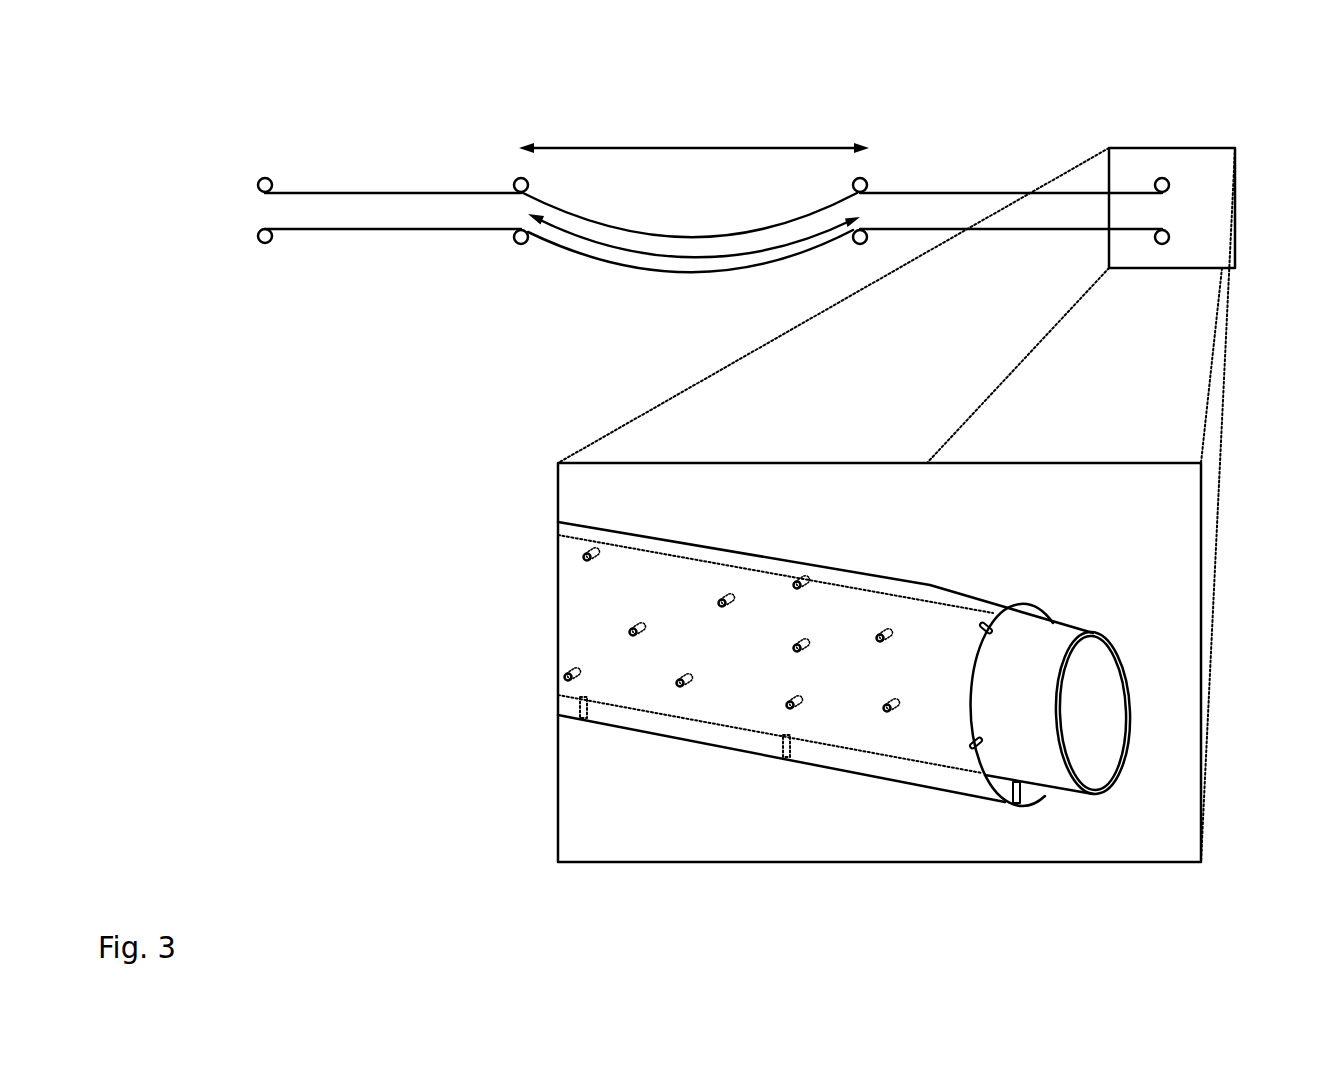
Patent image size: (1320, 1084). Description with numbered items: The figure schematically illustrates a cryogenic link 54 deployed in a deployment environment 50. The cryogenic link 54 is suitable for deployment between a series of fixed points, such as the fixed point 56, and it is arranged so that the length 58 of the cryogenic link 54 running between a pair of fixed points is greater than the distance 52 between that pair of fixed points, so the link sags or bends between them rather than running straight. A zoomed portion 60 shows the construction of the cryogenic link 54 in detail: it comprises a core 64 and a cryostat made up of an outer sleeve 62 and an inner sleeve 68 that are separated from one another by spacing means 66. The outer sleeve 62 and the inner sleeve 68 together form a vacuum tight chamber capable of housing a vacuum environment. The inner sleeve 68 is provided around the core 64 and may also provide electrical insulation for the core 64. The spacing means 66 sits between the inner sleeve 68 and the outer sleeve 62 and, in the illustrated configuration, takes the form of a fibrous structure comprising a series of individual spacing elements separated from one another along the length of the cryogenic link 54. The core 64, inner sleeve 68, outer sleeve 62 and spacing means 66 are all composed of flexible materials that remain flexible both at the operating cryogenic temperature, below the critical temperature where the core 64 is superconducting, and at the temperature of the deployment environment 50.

The deployment environment 50 is at (1197, 78).
The distance 52 is at (705, 145).
The cryogenic link 54 is at (378, 193).
The fixed point 56 is at (863, 180).
The length 58 is at (583, 235).
The zoomed portion 60 is at (1201, 530).
The outer sleeve 62 is at (970, 592).
The core 64 is at (1092, 695).
The spacing means 66 is at (800, 587).
The inner sleeve 68 is at (1094, 633).